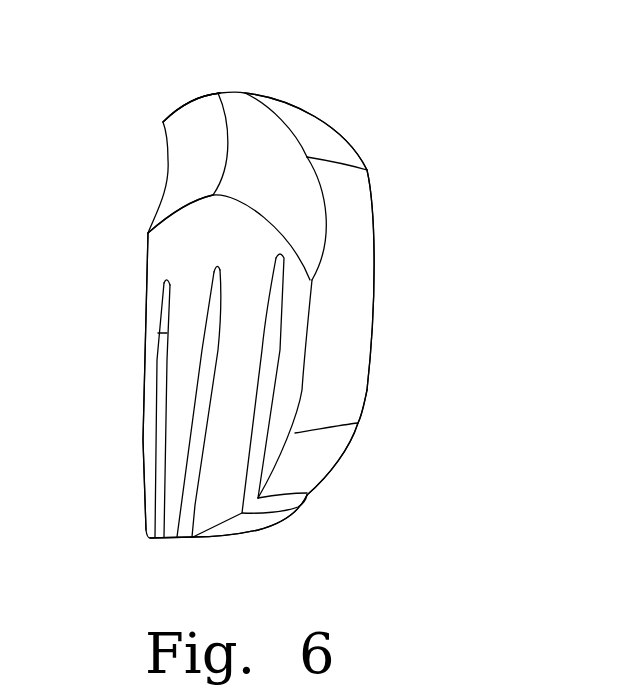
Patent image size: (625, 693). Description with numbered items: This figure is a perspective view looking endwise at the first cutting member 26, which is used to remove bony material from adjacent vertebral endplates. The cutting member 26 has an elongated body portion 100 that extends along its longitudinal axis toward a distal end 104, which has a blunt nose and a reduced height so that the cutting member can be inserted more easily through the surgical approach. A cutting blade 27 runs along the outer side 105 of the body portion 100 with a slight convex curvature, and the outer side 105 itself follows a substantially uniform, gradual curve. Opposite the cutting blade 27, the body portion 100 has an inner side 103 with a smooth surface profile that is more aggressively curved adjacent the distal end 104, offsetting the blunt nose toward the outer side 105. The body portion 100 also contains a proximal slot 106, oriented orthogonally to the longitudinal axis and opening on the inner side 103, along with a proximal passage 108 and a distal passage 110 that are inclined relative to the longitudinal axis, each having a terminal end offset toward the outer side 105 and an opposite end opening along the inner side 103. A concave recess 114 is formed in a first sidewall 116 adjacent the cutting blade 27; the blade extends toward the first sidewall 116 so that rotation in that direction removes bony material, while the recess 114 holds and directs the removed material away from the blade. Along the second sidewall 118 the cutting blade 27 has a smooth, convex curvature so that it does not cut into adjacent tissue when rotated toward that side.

The first cutting member 26 is at (410, 90).
The cutting blade 27 is at (189, 103).
The body portion 100 is at (386, 248).
The inner side 103 is at (272, 527).
The distal end 104 is at (363, 295).
The outer side 105 is at (162, 219).
The proximal slot 106 is at (160, 472).
The proximal passage 108 is at (202, 392).
The distal passage 110 is at (273, 325).
The concave recess 114 is at (185, 170).
The first sidewall 116 is at (200, 236).
The second sidewall 118 is at (367, 170).